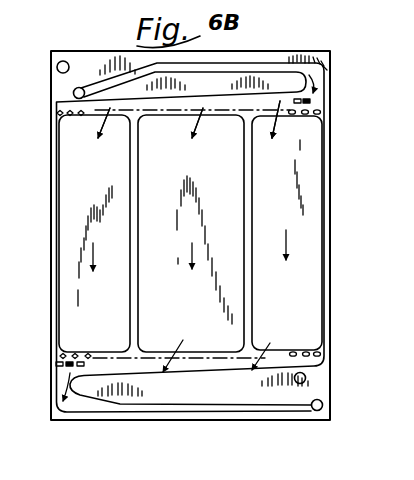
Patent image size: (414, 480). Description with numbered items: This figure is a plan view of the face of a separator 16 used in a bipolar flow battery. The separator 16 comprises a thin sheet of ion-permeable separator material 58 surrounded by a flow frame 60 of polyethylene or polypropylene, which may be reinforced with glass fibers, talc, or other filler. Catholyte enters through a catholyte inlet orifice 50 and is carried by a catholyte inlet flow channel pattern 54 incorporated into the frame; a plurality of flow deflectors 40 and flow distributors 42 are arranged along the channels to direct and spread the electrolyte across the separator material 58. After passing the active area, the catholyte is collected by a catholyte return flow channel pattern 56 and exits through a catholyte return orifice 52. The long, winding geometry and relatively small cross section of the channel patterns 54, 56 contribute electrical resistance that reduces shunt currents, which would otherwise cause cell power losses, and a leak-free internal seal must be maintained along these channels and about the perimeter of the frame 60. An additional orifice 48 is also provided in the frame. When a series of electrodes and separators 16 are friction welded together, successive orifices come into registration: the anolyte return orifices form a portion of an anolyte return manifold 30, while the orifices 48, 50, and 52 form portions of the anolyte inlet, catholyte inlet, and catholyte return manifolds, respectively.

The separator 16 is at (337, 206).
The anolyte return manifold 30 is at (63, 61).
The flow deflectors 40 is at (315, 102).
The flow distributors 42 is at (78, 355).
The orifice 48 is at (306, 377).
The catholyte inlet orifice 50 is at (74, 95).
The catholyte return orifice 52 is at (321, 403).
The catholyte inlet flow channel pattern 54 is at (218, 72).
The catholyte return flow channel pattern 56 is at (138, 403).
The ion-permeable separator material 58 is at (73, 168).
The flow frame 60 is at (295, 56).